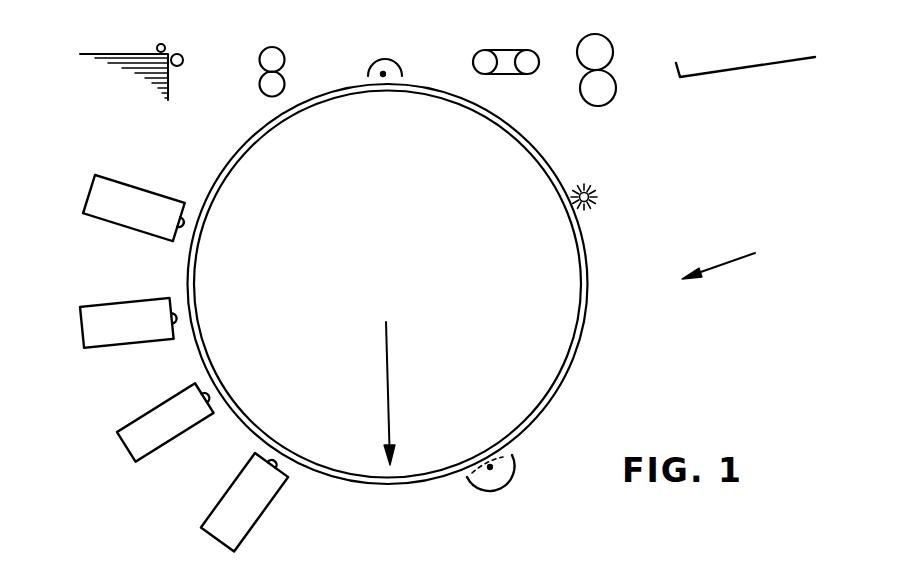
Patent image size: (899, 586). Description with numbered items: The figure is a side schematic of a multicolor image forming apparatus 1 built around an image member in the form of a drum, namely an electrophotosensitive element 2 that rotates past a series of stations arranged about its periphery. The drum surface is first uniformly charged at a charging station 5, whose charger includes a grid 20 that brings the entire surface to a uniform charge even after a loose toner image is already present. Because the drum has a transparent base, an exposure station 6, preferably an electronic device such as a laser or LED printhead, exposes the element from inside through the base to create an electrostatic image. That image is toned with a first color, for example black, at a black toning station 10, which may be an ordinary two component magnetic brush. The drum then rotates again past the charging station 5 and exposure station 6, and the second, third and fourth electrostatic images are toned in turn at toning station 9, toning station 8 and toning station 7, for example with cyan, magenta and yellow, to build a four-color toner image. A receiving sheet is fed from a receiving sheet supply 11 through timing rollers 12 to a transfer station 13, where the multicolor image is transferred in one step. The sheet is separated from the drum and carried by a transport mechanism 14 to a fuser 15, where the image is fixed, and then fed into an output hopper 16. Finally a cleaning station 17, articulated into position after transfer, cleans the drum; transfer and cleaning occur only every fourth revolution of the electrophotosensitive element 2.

The multicolor image forming apparatus 1 is at (732, 258).
The electrophotosensitive element 2 is at (548, 400).
The charging station 5 is at (490, 488).
The exposure station 6 is at (388, 388).
The toning station 7 is at (248, 540).
The toning station 8 is at (130, 455).
The toning station 9 is at (100, 347).
The black toning station 10 is at (98, 222).
The receiving sheet supply 11 is at (122, 53).
The timing rollers 12 is at (287, 55).
The transfer station 13 is at (395, 60).
The transport mechanism 14 is at (510, 48).
The fuser 15 is at (608, 102).
The output hopper 16 is at (718, 75).
The cleaning station 17 is at (600, 197).
The grid 20 is at (516, 463).